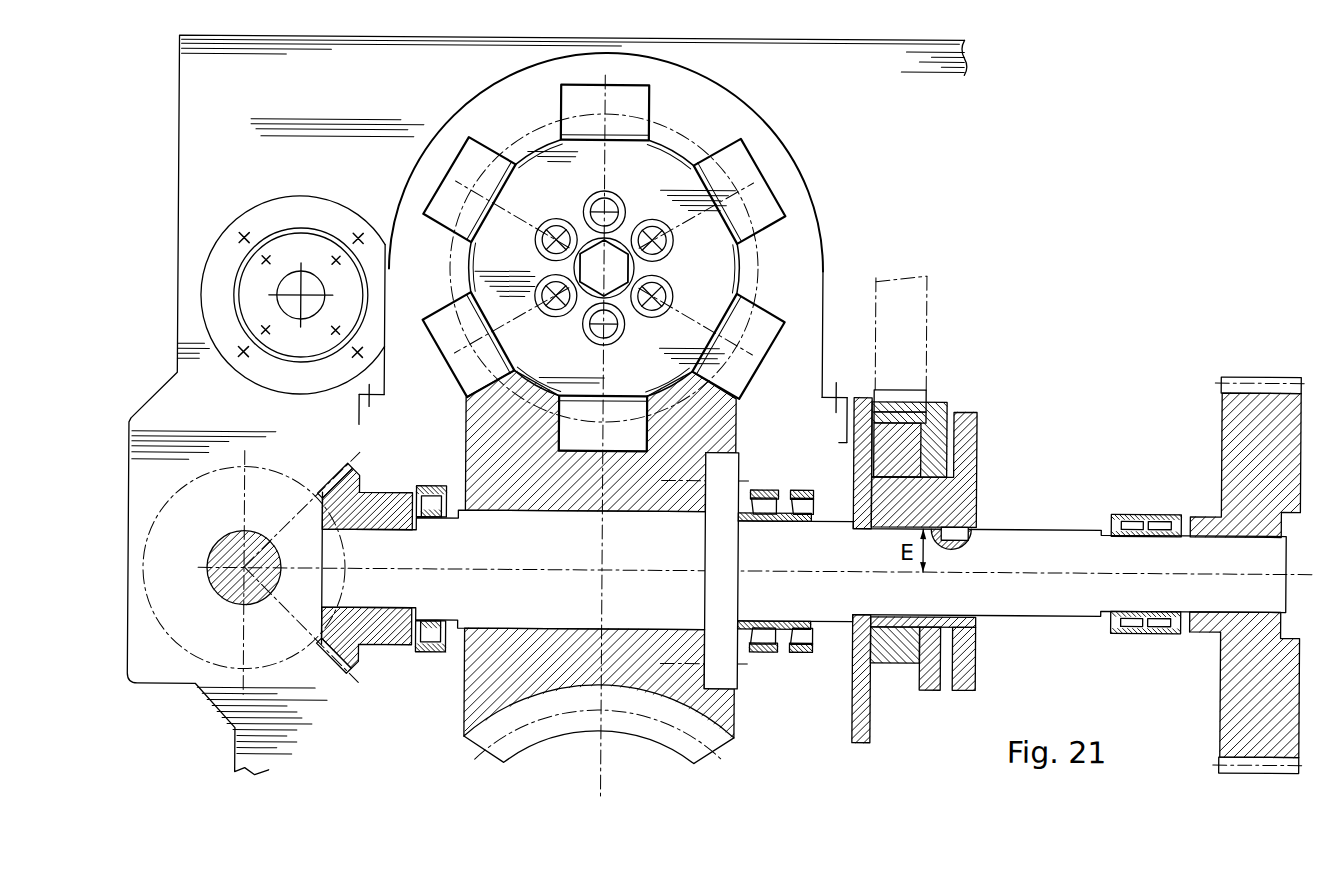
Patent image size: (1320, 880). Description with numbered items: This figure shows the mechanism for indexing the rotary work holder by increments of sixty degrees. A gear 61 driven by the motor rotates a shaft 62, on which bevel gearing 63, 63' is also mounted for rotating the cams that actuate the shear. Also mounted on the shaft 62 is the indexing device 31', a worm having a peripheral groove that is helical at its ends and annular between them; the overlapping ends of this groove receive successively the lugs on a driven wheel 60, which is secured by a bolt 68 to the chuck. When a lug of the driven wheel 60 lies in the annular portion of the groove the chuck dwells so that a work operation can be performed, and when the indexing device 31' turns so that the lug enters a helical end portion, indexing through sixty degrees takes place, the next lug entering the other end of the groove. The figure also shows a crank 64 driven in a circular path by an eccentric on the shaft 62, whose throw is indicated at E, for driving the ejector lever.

The driven wheel 60 is at (792, 181).
The bolt 68 is at (615, 266).
The crank 64 is at (927, 398).
The shaft 62 is at (1023, 528).
The gear 61 is at (1222, 392).
The bevel gearing 63 is at (367, 586).
The bevel gearing 63' is at (318, 546).
The indexing device 31' is at (625, 758).